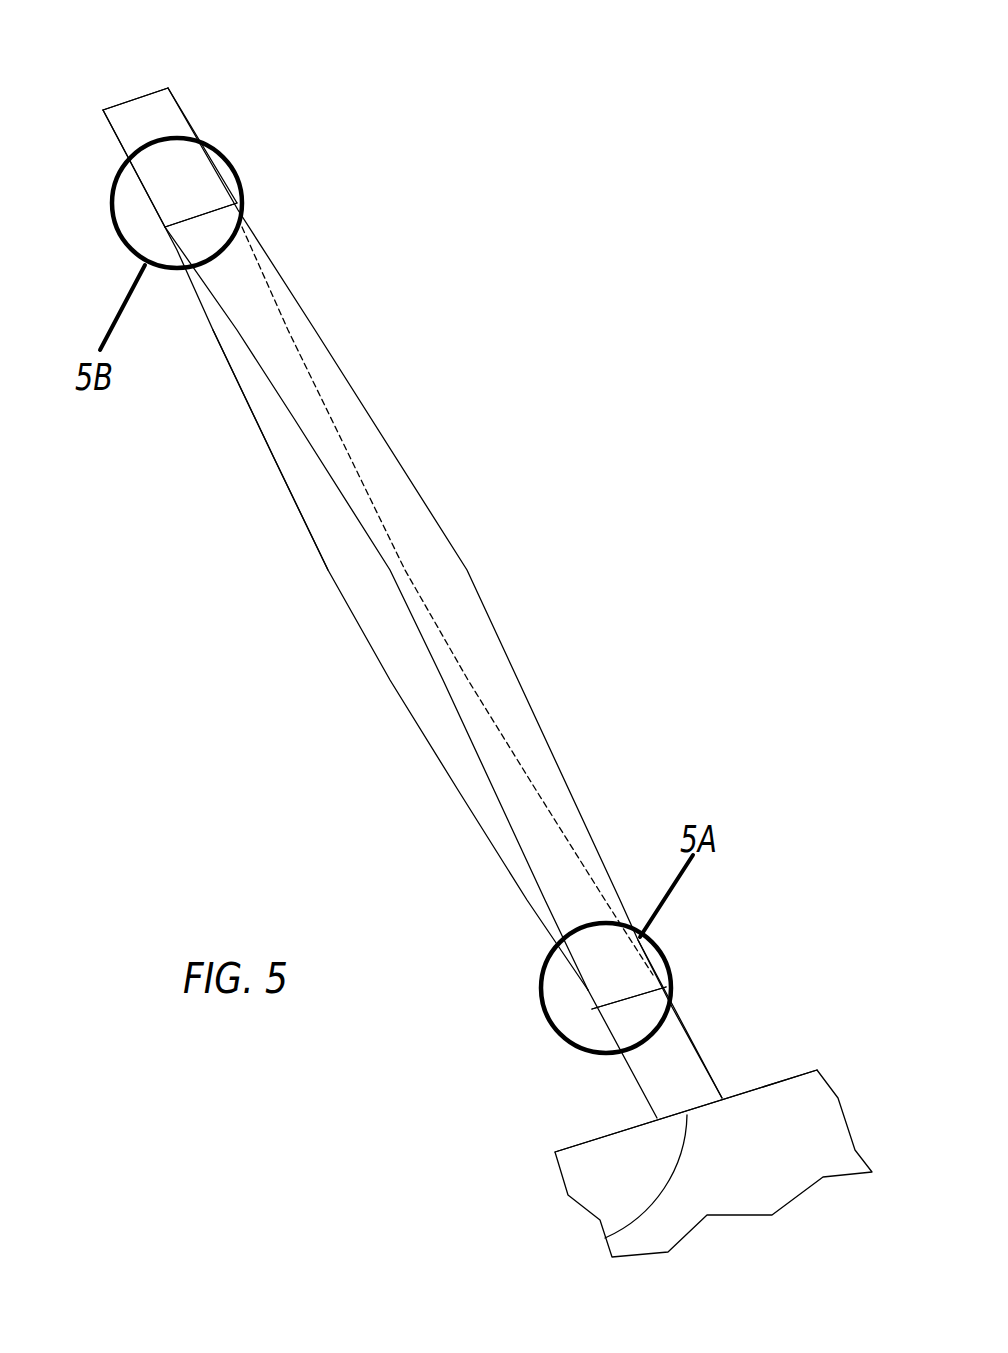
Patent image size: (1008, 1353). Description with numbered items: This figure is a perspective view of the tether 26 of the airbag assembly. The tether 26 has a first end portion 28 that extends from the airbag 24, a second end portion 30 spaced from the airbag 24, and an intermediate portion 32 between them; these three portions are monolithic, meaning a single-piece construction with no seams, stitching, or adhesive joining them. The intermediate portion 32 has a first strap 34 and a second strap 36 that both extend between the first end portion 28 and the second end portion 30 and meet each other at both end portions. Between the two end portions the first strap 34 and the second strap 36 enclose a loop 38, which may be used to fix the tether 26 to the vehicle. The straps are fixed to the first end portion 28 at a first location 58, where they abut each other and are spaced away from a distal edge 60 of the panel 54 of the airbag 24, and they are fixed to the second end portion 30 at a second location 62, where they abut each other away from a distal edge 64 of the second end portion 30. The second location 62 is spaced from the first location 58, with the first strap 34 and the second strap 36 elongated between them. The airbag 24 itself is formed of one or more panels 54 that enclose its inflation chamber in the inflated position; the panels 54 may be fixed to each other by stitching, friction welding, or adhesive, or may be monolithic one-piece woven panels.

The airbag 24 is at (783, 1014).
The tether 26 is at (490, 491).
The first end portion 28 is at (672, 1063).
The second end portion 30 is at (165, 117).
The intermediate portion 32 is at (409, 608).
The first strap 34 is at (430, 580).
The second strap 36 is at (402, 640).
The loop 38 is at (334, 518).
The panel 54 is at (787, 1102).
The first location 58 is at (591, 1009).
The distal edge 60 is at (606, 1240).
The second location 62 is at (157, 227).
The distal edge 64 is at (138, 97).